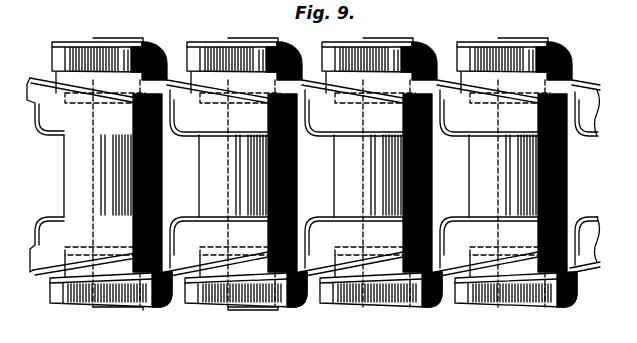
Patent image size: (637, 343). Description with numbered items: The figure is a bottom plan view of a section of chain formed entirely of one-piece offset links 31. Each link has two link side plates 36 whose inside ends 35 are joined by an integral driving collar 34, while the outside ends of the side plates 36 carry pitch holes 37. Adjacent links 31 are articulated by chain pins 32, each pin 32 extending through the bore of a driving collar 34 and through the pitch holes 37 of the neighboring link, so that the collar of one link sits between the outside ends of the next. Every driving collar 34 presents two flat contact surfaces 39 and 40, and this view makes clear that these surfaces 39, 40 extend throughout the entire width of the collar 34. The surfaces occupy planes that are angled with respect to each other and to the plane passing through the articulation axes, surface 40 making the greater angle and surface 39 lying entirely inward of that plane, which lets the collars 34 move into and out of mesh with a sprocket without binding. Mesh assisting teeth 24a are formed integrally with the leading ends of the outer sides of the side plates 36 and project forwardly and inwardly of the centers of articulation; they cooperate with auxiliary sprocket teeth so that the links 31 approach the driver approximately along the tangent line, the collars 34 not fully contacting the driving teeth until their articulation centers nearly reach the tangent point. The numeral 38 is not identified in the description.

The one-piece offset link 31 is at (213, 43).
The link block 38 is at (315, 50).
The pitch hole 37 is at (238, 308).
The auxiliary mesh assisting tooth 24a is at (466, 305).
The chain pin 32 is at (90, 181).
The contact surface 40 is at (203, 164).
The contact surface 39 is at (293, 192).
The link side plate 36 is at (384, 179).
The inside end of link side plate 35 is at (570, 137).
The driving collar 34 is at (116, 340).